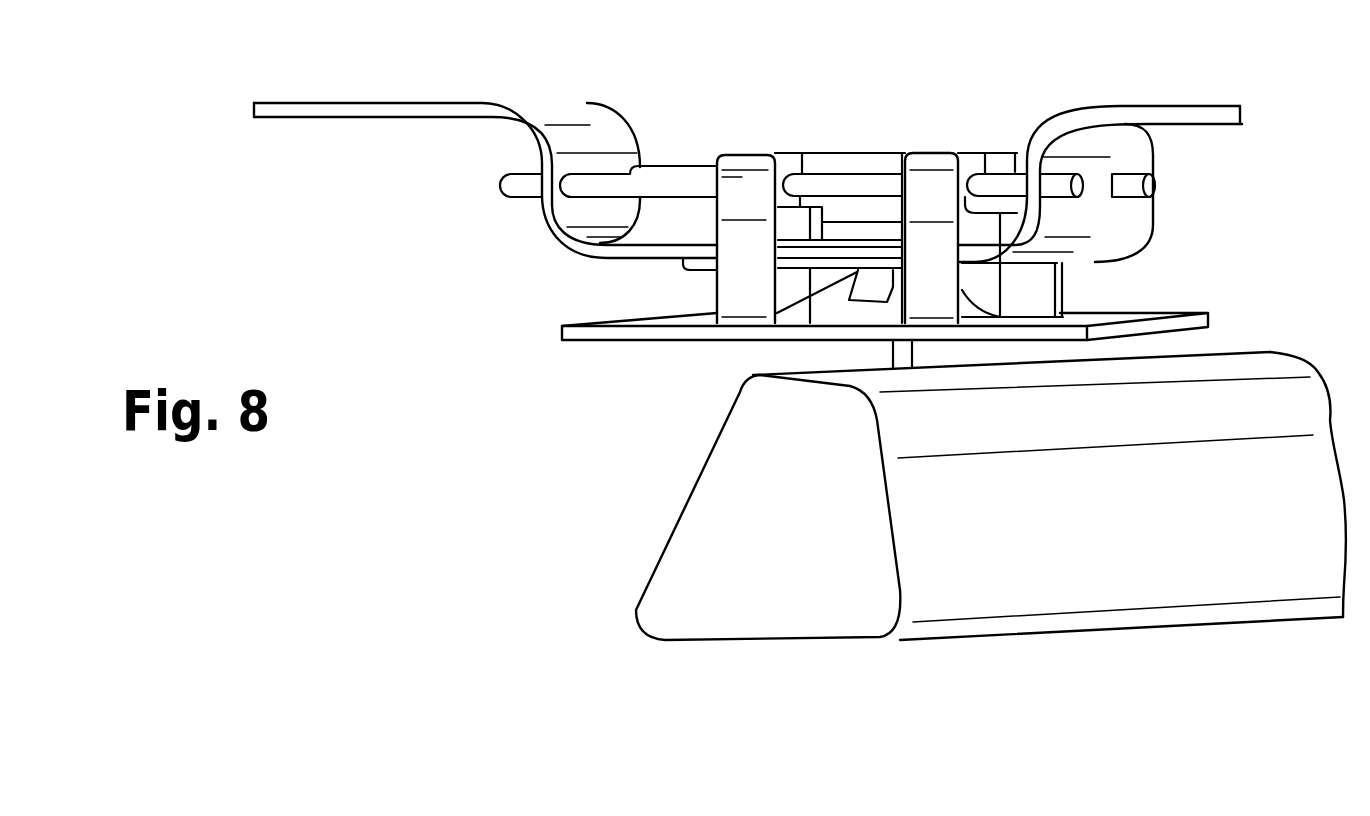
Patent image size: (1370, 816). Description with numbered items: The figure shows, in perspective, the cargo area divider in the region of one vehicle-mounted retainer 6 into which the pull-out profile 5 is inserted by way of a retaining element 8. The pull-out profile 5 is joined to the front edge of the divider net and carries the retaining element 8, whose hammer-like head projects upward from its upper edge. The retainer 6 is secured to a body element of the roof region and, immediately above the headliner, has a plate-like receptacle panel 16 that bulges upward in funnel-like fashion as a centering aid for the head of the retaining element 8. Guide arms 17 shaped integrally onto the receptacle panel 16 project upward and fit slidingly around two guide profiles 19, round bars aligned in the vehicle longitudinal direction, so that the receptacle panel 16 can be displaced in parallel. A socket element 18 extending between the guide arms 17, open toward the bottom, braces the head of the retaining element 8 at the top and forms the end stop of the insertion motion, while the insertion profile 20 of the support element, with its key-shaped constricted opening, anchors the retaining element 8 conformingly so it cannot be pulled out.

The pull-out profile 5 is at (1140, 537).
The vehicle-mounted retainer 6 is at (512, 290).
The retaining element 8 is at (871, 283).
The receptacle panel 16 is at (797, 333).
The guide arms 17 is at (747, 188).
The socket element 18 is at (873, 210).
The guide profiles 19 is at (1132, 180).
The insertion profile 20 is at (798, 265).